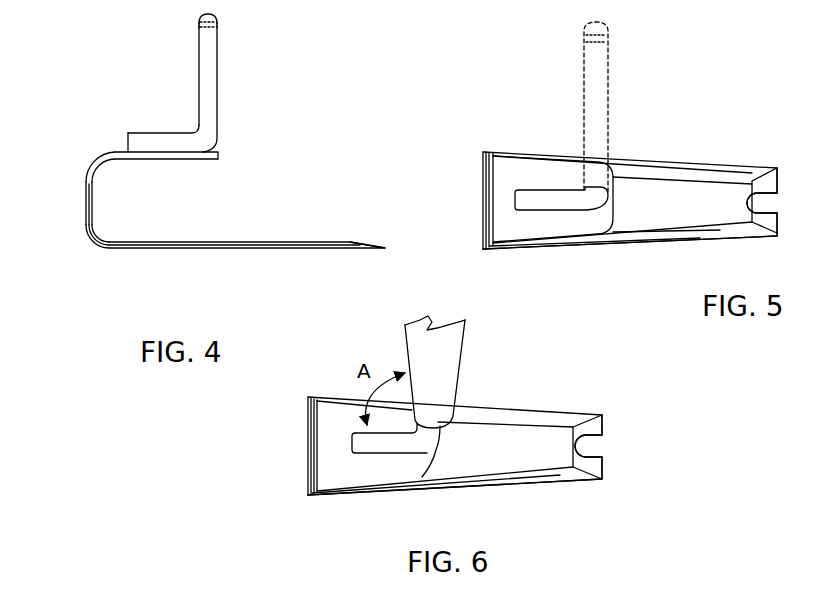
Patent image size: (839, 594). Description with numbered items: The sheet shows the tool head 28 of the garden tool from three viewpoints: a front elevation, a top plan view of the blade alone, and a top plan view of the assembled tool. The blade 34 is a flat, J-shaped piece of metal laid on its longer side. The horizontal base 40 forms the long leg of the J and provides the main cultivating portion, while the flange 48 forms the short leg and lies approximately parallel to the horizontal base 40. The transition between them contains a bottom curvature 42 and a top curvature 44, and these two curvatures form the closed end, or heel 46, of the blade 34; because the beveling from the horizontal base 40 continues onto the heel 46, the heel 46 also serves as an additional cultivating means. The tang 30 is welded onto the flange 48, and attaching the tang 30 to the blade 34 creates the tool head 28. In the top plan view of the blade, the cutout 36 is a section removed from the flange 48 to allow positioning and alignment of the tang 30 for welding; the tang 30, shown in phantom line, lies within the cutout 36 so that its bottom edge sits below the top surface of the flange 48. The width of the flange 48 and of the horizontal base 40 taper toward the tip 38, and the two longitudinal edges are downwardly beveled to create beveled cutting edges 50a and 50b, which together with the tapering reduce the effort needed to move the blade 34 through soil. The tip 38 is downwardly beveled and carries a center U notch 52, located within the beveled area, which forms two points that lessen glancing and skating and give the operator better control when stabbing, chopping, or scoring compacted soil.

In FIG. 5, the tool head 28 is at (531, 115).
In FIG. 4, the tang 30 is at (227, 83).
In FIG. 5, the tang 30 is at (620, 107).
In FIG. 4, the blade 34 is at (249, 204).
In FIG. 5, the blade 34 is at (720, 149).
In FIG. 6, the blade 34 is at (547, 386).
In FIG. 5, the cutout 36 is at (513, 200).
In FIG. 4, the tip 38 is at (393, 245).
In FIG. 5, the tip 38 is at (782, 173).
In FIG. 6, the tip 38 is at (612, 423).
In FIG. 4, the horizontal base 40 is at (228, 255).
In FIG. 5, the horizontal base 40 is at (600, 253).
In FIG. 6, the horizontal base 40 is at (390, 502).
In FIG. 4, the bottom curvature 42 is at (85, 237).
In FIG. 4, the top curvature 44 is at (82, 168).
In FIG. 4, the heel 46 is at (63, 204).
In FIG. 6, the heel 46 is at (286, 445).
In FIG. 4, the flange 48 is at (230, 155).
In FIG. 5, the flange 48 is at (622, 193).
In FIG. 6, the beveled cutting edge 50a is at (473, 490).
In FIG. 6, the beveled cutting edge 50b is at (475, 407).
In FIG. 5, the U notch 52 is at (760, 203).
In FIG. 6, the U notch 52 is at (587, 448).